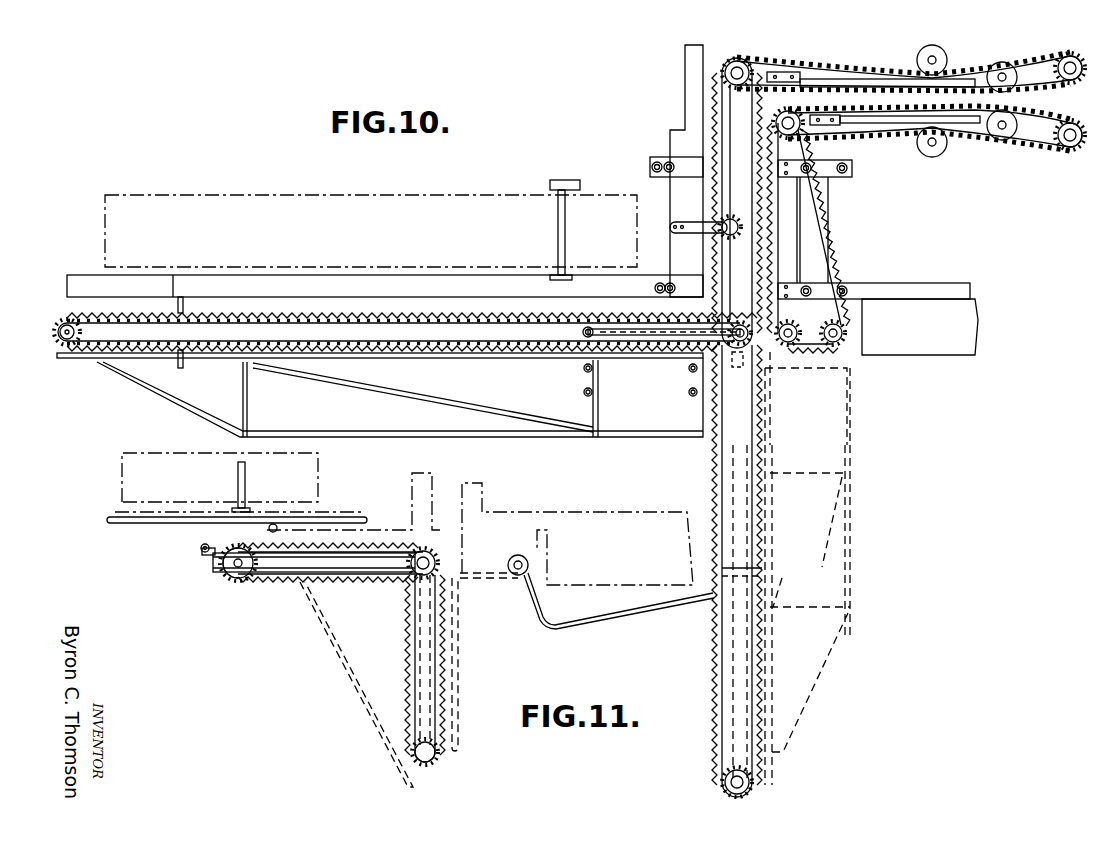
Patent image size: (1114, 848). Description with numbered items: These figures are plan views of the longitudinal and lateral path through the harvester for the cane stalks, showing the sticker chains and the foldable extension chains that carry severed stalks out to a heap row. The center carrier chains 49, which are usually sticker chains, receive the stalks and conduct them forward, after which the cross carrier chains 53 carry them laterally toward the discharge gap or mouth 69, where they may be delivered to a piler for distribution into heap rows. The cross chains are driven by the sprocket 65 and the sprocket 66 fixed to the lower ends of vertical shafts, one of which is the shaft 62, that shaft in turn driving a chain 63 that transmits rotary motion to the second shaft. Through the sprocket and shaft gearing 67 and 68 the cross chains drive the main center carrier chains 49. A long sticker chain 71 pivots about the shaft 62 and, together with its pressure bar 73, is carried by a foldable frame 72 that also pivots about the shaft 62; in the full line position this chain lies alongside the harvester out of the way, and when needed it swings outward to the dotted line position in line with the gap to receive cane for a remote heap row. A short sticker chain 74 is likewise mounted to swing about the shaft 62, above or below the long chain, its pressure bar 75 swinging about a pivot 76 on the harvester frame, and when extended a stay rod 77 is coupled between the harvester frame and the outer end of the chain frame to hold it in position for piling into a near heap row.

In FIG. 10, the center carrier chains 49 is at (1055, 88).
In FIG. 10, the cross carrier chains 53 is at (830, 195).
In FIG. 10, the shaft 62 is at (745, 340).
In FIG. 11, the shaft 62 is at (435, 572).
In FIG. 10, the chain 63 is at (840, 346).
In FIG. 10, the sprocket 65 is at (740, 317).
In FIG. 10, the sprocket 66 is at (728, 240).
In FIG. 10, the sprocket and shaft gearing 67 is at (729, 66).
In FIG. 10, the sprocket and shaft gearing 68 is at (788, 110).
In FIG. 10, the discharge gap or mouth 69 is at (760, 342).
In FIG. 10, the long sticker chain 71 is at (480, 352).
In FIG. 11, the long sticker chain 71 is at (716, 478).
In FIG. 10, the foldable frame 72 is at (513, 438).
In FIG. 11, the foldable frame 72 is at (850, 555).
In FIG. 10, the pressure bar 73 is at (430, 358).
In FIG. 11, the pressure bar 73 is at (772, 555).
In FIG. 11, the short sticker chain 74 is at (357, 580).
In FIG. 11, the pressure bar 75 is at (456, 665).
In FIG. 11, the pivot 76 is at (522, 552).
In FIG. 11, the stay rod 77 is at (360, 685).